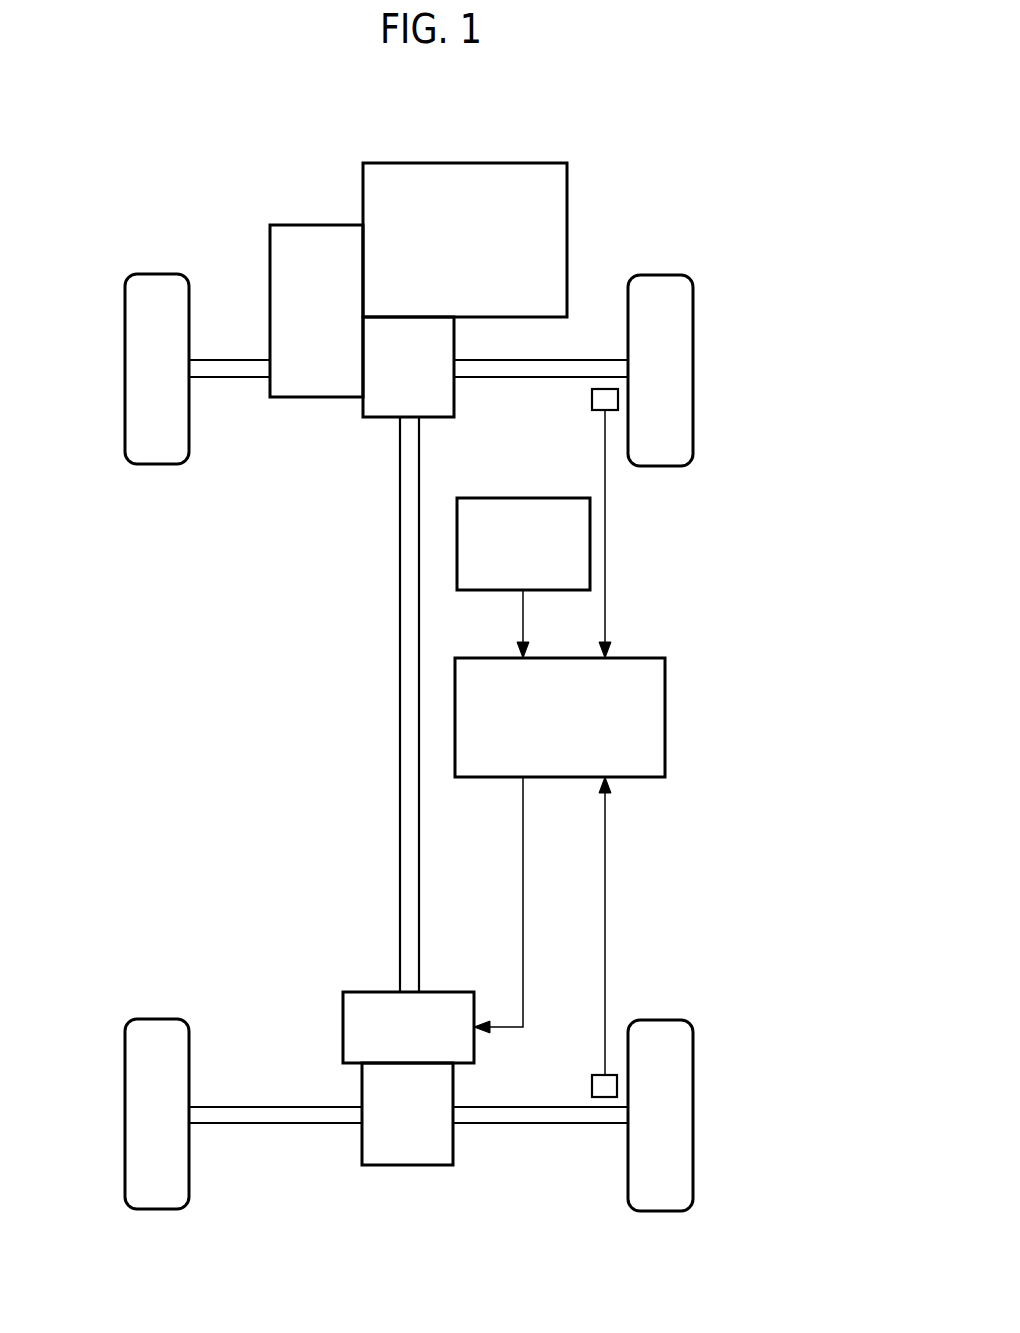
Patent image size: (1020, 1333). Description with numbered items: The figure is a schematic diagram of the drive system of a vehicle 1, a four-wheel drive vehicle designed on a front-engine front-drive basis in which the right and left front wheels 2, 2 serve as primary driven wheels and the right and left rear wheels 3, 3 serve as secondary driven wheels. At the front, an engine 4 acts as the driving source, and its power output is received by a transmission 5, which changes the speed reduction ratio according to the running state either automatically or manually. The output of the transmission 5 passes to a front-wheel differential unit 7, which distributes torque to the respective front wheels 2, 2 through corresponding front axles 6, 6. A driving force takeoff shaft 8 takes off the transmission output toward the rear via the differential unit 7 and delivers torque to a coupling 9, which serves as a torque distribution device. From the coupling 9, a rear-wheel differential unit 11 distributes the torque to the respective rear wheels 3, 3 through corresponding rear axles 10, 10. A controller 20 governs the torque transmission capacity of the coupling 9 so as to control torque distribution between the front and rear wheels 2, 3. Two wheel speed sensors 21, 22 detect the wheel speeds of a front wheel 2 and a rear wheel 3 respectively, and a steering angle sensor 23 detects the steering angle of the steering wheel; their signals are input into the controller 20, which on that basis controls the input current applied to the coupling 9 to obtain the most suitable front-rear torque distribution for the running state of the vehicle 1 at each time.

The vehicle 1 is at (632, 116).
The front wheels 2 is at (152, 274).
The rear wheels 3 is at (152, 1019).
The engine 4 is at (567, 178).
The transmission 5 is at (310, 225).
The front axles 6 is at (232, 378).
The front-wheel differential unit 7 is at (381, 420).
The driving force takeoff shaft 8 is at (400, 702).
The coupling 9 is at (444, 992).
The rear axles 10 is at (267, 1124).
The rear-wheel differential unit 11 is at (408, 1165).
The controller 20 is at (665, 688).
The wheel speed sensor 21 is at (592, 398).
The wheel speed sensor 22 is at (592, 1085).
The steering angle sensor 23 is at (509, 498).